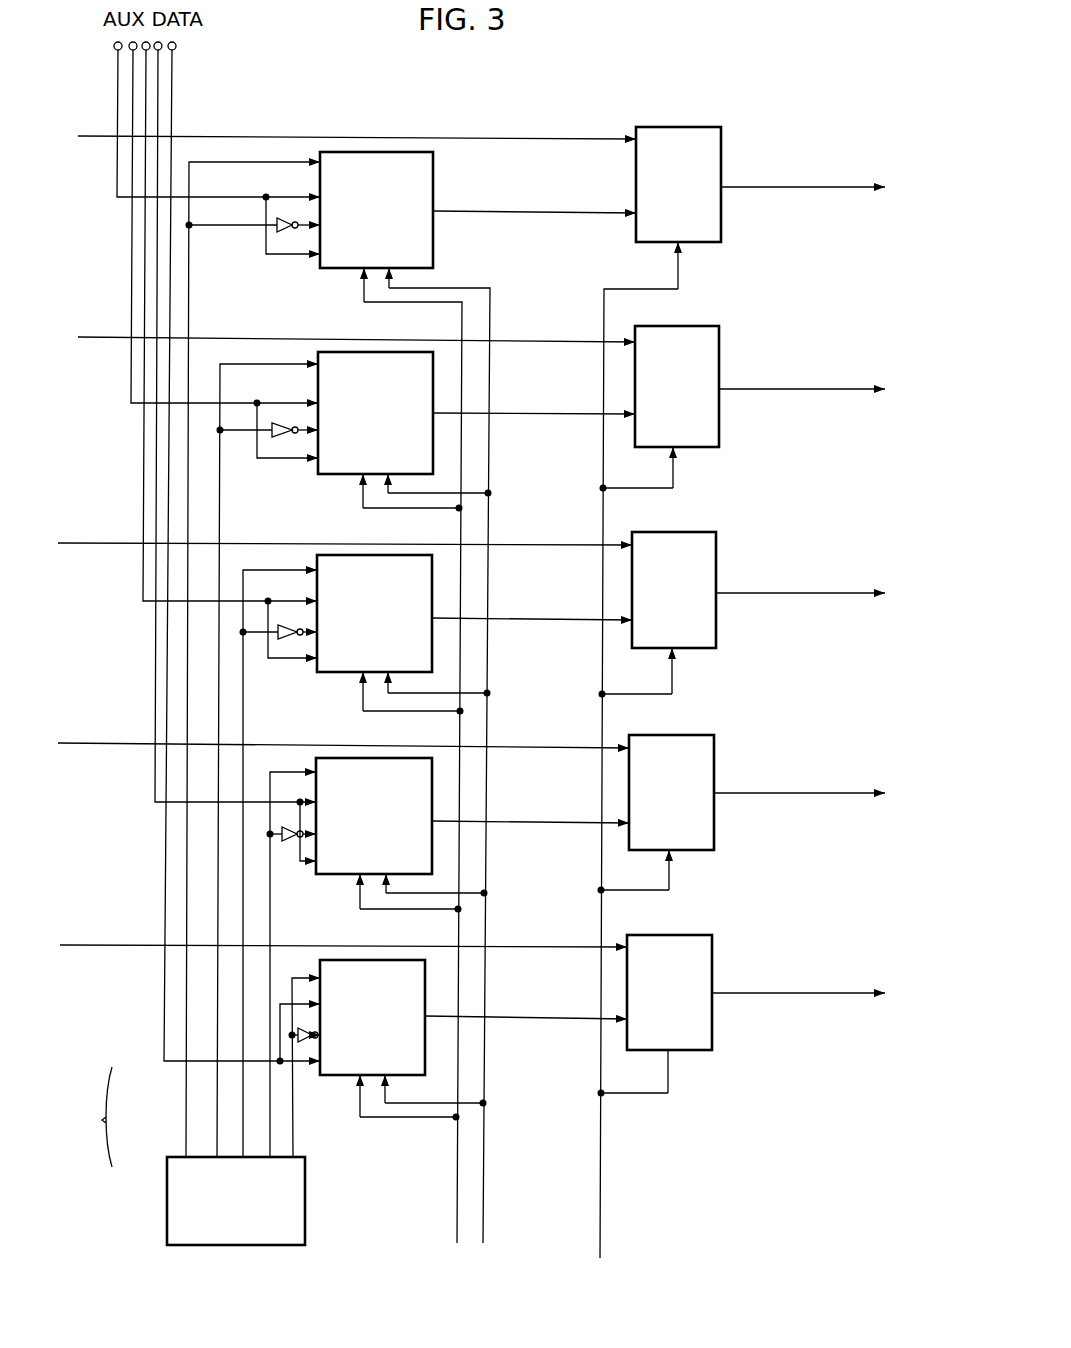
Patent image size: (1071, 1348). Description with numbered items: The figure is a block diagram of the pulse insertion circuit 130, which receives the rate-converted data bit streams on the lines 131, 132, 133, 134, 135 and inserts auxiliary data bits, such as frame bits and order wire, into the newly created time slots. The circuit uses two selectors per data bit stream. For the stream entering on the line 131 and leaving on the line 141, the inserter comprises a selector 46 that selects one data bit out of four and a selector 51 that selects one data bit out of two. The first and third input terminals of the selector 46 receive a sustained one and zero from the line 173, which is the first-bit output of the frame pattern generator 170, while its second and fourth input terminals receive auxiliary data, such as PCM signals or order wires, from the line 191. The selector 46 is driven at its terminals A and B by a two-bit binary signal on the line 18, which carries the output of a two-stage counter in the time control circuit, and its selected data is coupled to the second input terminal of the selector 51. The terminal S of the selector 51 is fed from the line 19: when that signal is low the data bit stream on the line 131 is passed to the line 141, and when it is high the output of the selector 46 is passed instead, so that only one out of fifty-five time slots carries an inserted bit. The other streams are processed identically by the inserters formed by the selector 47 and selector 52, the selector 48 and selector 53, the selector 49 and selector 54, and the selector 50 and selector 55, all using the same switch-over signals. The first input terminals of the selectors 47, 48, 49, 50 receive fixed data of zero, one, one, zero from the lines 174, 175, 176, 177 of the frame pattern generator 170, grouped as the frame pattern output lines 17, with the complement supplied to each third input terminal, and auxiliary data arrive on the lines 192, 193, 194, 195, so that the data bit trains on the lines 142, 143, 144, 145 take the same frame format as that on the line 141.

The frame pattern output lines 17 is at (199, 668).
The two-bit switching signal line 18 is at (494, 1250).
The switching signal line 19 is at (602, 1240).
The selector 46 is at (361, 152).
The selector 47 is at (341, 352).
The selector 48 is at (338, 555).
The selector 49 is at (339, 758).
The selector 50 is at (351, 960).
The selector 51 is at (684, 127).
The selector 52 is at (666, 326).
The selector 53 is at (689, 532).
The selector 54 is at (706, 735).
The selector 55 is at (712, 960).
The pulse insertion circuit 130 is at (558, 1156).
The line 131 is at (106, 134).
The line 132 is at (120, 336).
The line 133 is at (112, 542).
The line 134 is at (96, 742).
The line 135 is at (86, 944).
The line 141 is at (802, 185).
The line 142 is at (787, 389).
The line 143 is at (794, 592).
The line 144 is at (797, 791).
The line 145 is at (783, 992).
The frame pattern generator 170 is at (305, 1240).
The line 173 is at (185, 1075).
The line 174 is at (218, 1092).
The line 175 is at (243, 1102).
The line 176 is at (269, 1113).
The line 177 is at (293, 1130).
The line 191 is at (118, 68).
The line 192 is at (133, 90).
The line 193 is at (146, 72).
The line 194 is at (158, 94).
The line 195 is at (172, 112).